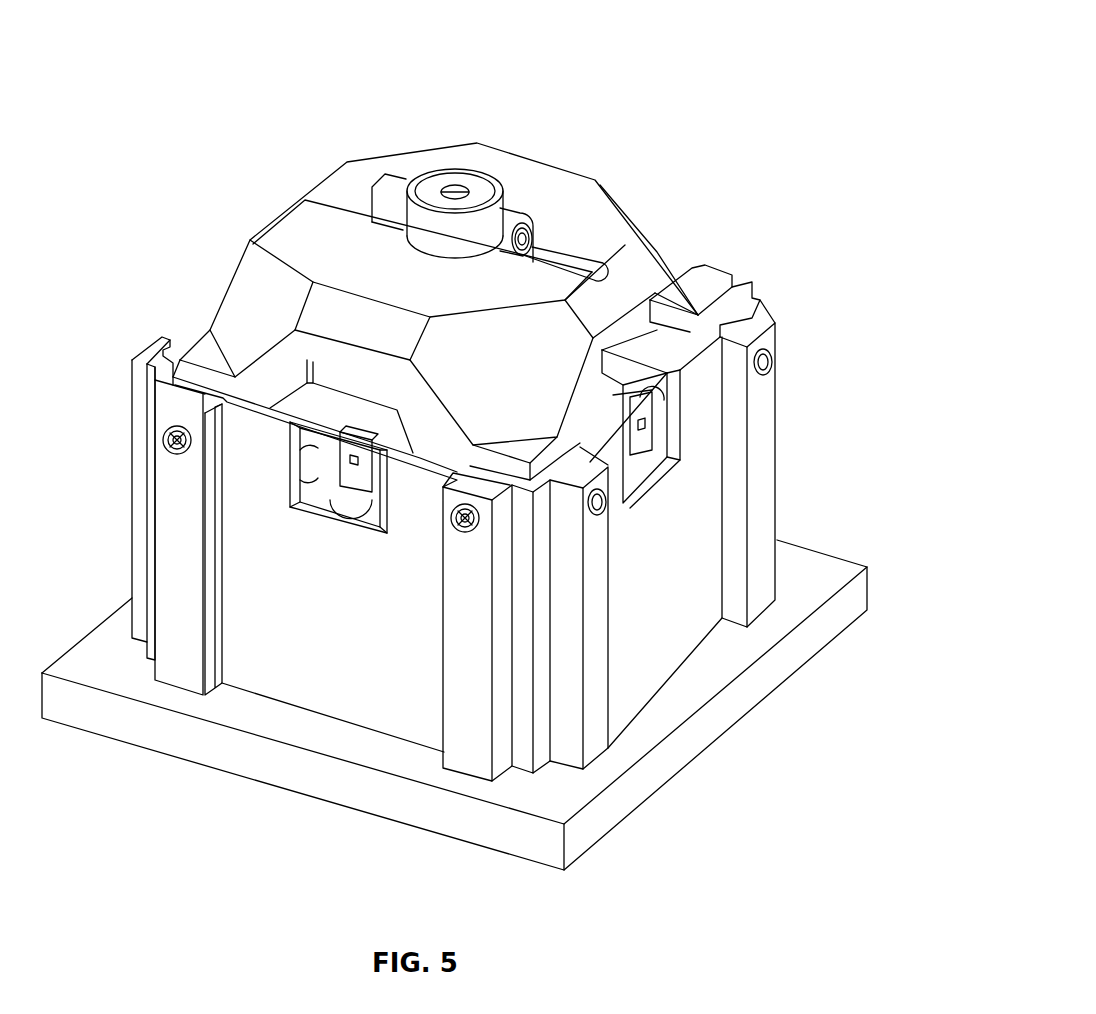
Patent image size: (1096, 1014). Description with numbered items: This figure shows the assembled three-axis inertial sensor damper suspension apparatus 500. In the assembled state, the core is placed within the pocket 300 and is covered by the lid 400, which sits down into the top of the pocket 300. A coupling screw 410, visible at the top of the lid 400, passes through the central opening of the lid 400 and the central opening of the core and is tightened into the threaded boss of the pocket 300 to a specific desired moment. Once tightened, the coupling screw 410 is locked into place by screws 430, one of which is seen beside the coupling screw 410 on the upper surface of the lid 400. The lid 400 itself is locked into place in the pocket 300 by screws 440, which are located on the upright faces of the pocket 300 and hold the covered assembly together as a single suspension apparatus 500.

The three-axis inertial sensor damper suspension apparatus 500 is at (697, 73).
The pocket 300 is at (697, 538).
The lid 400 is at (250, 292).
The coupling screw 410 is at (432, 186).
The screws 430 is at (527, 251).
The screws 440 is at (172, 443).